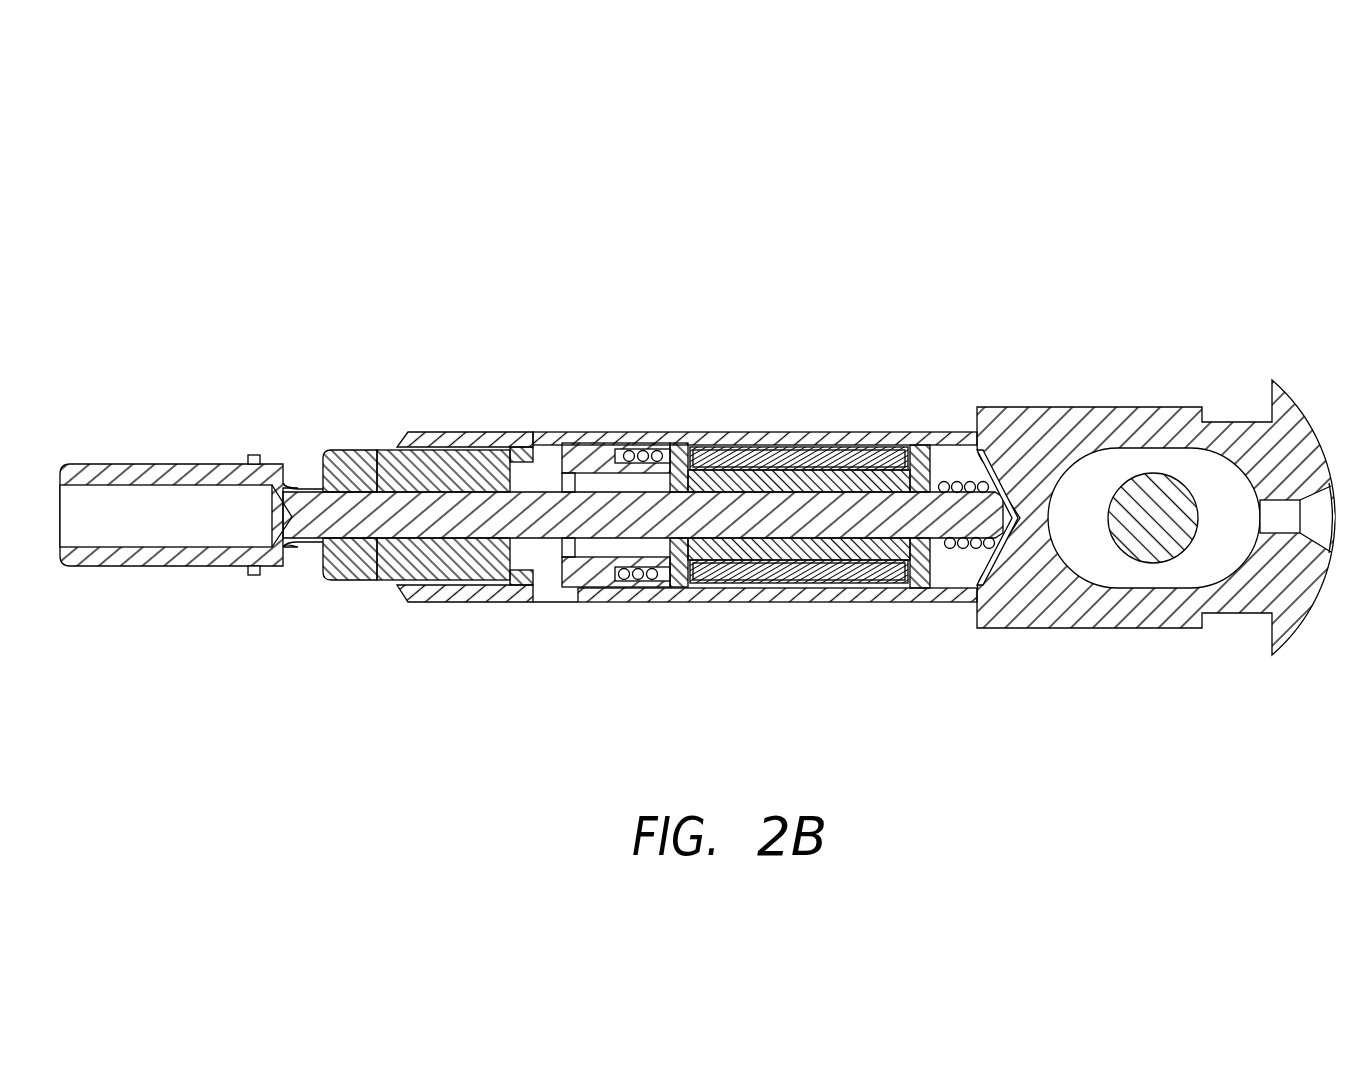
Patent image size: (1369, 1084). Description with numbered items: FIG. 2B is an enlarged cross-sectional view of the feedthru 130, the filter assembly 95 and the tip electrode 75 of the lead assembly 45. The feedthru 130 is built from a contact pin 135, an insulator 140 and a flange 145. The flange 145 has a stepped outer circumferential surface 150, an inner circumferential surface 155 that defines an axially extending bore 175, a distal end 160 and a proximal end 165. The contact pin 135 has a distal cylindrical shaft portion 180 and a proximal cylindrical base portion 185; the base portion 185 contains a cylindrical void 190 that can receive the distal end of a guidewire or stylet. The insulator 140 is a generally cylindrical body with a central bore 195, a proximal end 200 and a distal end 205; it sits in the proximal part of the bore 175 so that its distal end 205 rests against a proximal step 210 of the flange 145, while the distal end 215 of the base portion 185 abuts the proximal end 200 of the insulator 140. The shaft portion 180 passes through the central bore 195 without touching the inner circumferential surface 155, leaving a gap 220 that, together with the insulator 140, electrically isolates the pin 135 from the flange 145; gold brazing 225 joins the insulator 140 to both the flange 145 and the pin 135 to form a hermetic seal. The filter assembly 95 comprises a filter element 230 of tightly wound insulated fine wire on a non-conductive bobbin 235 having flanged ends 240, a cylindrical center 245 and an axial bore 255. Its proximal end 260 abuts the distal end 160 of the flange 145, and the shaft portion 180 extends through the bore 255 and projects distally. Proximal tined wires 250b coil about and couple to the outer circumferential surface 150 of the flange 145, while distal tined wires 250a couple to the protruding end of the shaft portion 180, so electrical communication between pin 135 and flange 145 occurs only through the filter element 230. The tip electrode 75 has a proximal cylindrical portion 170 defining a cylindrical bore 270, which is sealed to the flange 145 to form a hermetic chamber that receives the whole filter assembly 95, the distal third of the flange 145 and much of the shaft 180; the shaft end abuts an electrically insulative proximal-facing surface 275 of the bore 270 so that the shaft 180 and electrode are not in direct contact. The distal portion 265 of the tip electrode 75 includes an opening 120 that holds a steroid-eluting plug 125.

The drive assembly 45 is at (726, 226).
The tip electrode 75 is at (1323, 598).
The filter assembly 95 is at (785, 625).
The opening 120 is at (1167, 465).
The steroid-eluting plug 125 is at (1162, 552).
The feedthru 130 is at (500, 642).
The contact pin 135 is at (187, 568).
The insulator 140 is at (345, 458).
The flange 145 is at (458, 422).
The outer circumferential surface 150 is at (520, 430).
The inner circumferential surface 155 is at (560, 455).
The distal end 160 is at (690, 445).
The proximal end 165 is at (405, 584).
The proximal cylindrical portion 170 is at (722, 445).
The bore 175 is at (517, 462).
The distal cylindrical shaft portion 180 is at (565, 583).
The proximal cylindrical base portion 185 is at (208, 464).
The cylindrical void 190 is at (72, 520).
The central bore 195 is at (375, 480).
The proximal end 200 is at (320, 462).
The distal end 205 is at (547, 525).
The proximal step 210 is at (500, 582).
The distal end 215 is at (300, 562).
The gap 220 is at (612, 470).
The gold brazing 225 is at (395, 598).
The filter element 230 is at (810, 450).
The bobbin 235 is at (865, 460).
The flanged ends 240 is at (685, 584).
The cylindrical center 245 is at (848, 460).
The distal terminal 250a is at (962, 549).
The proximal terminal 250b is at (625, 580).
The bore 255 is at (890, 455).
The proximal end 260 is at (650, 445).
The distal portion 265 is at (1135, 405).
The cylindrical bore 270 is at (785, 445).
The electrically insulative proximal-facing surface 275 is at (978, 450).